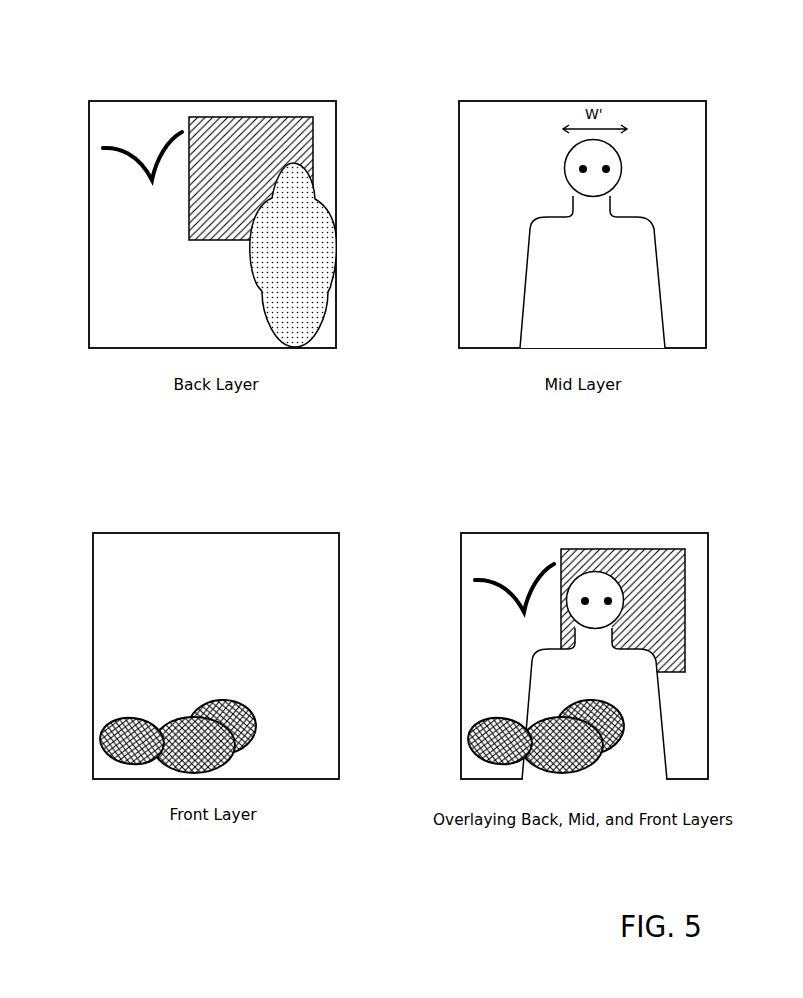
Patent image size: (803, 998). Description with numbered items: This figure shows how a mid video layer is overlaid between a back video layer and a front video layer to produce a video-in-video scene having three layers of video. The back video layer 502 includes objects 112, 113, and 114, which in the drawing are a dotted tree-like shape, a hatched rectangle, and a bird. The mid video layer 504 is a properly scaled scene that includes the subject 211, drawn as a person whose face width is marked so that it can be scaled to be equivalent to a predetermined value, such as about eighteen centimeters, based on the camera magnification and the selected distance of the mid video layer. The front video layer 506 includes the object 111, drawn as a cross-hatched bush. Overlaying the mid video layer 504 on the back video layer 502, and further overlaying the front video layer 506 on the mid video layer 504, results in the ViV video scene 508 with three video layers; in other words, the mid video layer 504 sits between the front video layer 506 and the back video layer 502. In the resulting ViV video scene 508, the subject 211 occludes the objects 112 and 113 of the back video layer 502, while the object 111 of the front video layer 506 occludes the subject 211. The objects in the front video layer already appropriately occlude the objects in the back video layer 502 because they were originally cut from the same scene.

The object 111 is at (123, 722).
The object 112 is at (320, 200).
The object 113 is at (265, 118).
The object 114 is at (118, 147).
The subject 211 is at (649, 222).
The back video layer 502 is at (120, 65).
The mid video layer 504 is at (490, 65).
The front video layer 506 is at (122, 495).
The ViV video scene 508 is at (492, 495).